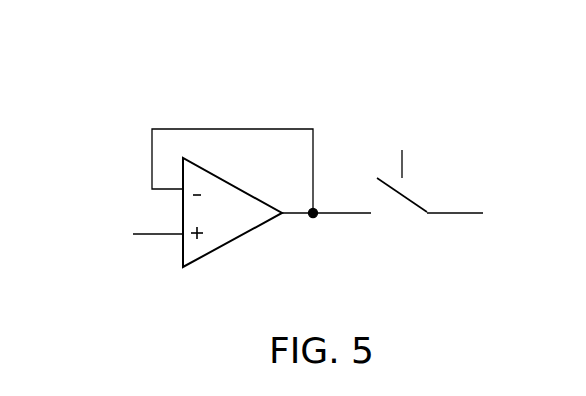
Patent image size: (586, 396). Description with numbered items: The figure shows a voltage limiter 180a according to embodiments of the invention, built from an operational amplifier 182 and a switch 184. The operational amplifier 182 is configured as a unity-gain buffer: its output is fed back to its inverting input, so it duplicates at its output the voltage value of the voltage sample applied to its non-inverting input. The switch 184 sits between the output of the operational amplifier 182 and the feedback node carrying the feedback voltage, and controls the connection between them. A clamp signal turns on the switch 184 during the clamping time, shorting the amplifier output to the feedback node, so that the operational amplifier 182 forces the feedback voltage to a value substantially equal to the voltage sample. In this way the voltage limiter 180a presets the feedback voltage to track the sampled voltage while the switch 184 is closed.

The voltage limiter 180a is at (132, 98).
The operational amplifier 182 is at (228, 243).
The switch 184 is at (398, 223).